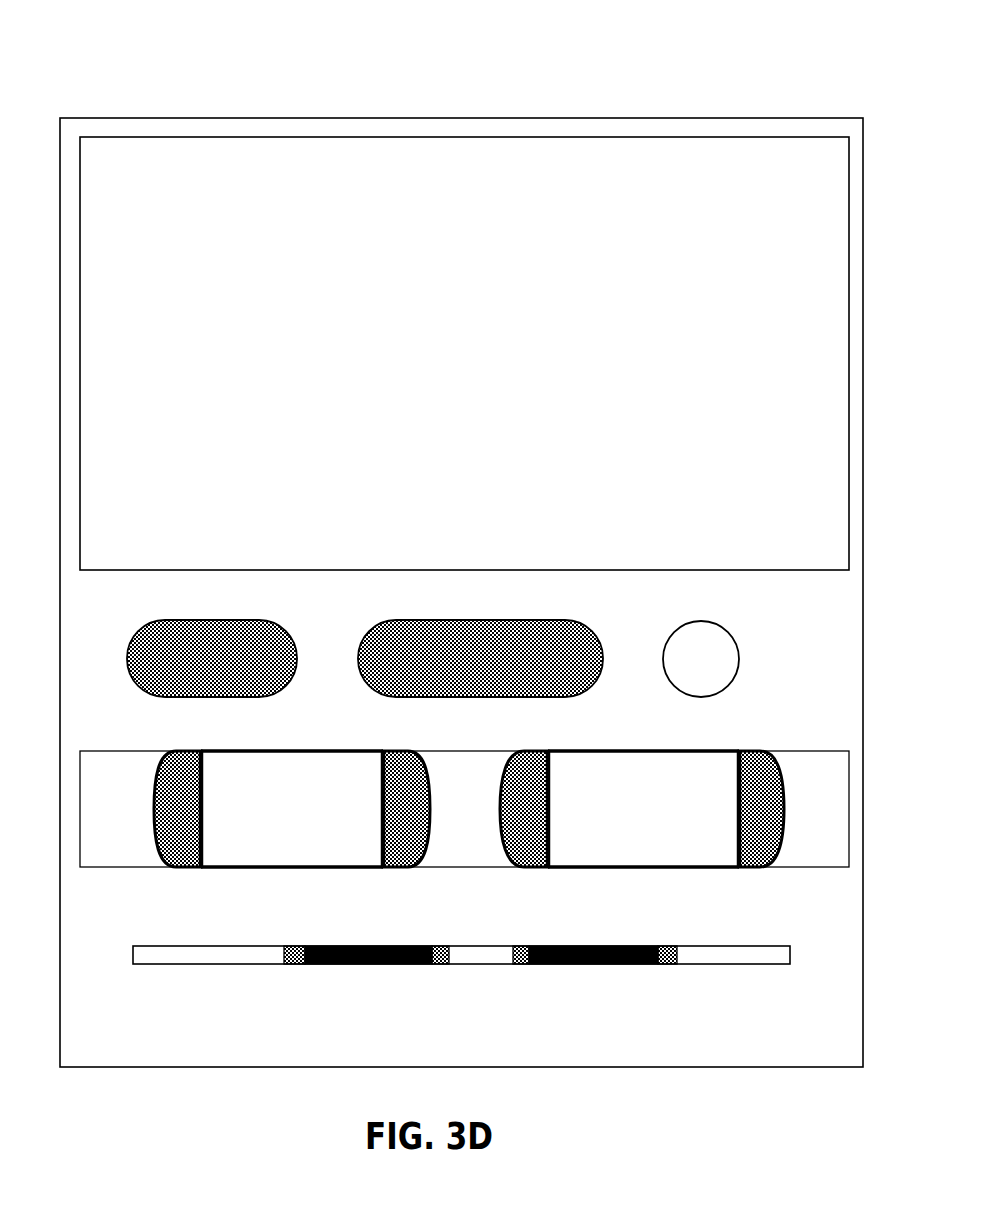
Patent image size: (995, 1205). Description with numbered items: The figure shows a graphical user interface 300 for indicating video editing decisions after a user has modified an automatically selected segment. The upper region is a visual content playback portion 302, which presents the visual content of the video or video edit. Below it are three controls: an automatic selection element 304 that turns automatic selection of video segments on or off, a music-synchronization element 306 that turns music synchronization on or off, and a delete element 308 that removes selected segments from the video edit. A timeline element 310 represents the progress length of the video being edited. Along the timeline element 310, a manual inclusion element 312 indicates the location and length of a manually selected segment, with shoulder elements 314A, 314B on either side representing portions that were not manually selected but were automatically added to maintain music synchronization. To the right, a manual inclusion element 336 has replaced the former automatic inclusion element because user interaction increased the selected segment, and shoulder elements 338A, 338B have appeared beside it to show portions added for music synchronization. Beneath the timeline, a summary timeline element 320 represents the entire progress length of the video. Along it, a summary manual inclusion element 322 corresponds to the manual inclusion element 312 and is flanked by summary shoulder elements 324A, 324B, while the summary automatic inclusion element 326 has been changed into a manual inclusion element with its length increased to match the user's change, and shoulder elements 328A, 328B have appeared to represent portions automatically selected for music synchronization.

The graphical user interface 300 is at (485, 118).
The visual content playback portion 302 is at (464, 353).
The automatic selection element 304 is at (213, 622).
The music-synchronization element 306 is at (450, 622).
The delete element 308 is at (702, 622).
The timeline element 310 is at (150, 870).
The manual inclusion element 312 is at (260, 750).
The shoulder element 314A is at (157, 793).
The shoulder element 314B is at (432, 790).
The manual inclusion element 336 is at (745, 748).
The shoulder element 338A is at (503, 840).
The shoulder element 338B is at (755, 843).
The summary timeline element 320 is at (240, 966).
The summary manual inclusion element 322 is at (375, 966).
The summary shoulder element 324A is at (295, 958).
The summary shoulder element 324B is at (445, 966).
The summary automatic inclusion element 326 is at (617, 966).
The shoulder element 328A is at (527, 966).
The shoulder element 328B is at (677, 966).